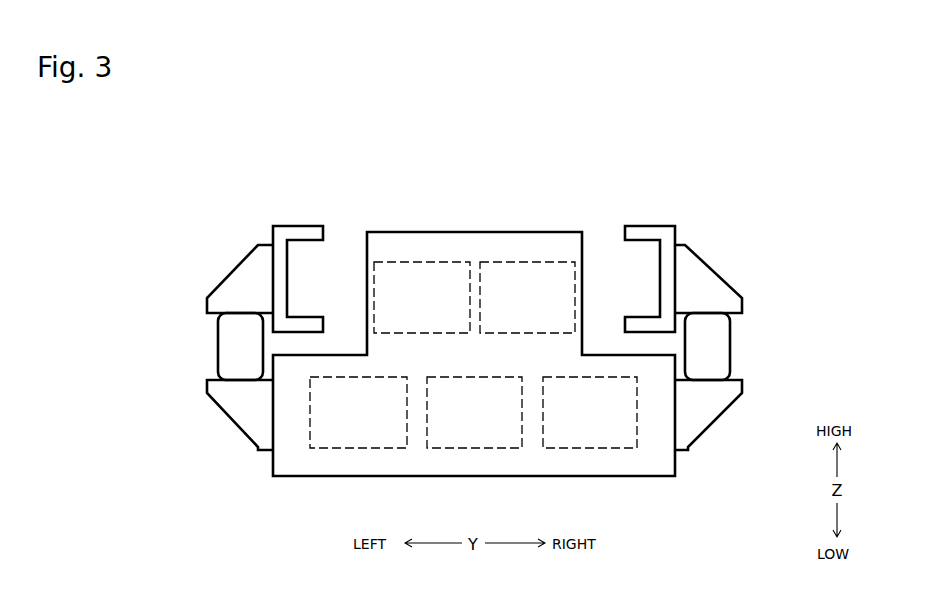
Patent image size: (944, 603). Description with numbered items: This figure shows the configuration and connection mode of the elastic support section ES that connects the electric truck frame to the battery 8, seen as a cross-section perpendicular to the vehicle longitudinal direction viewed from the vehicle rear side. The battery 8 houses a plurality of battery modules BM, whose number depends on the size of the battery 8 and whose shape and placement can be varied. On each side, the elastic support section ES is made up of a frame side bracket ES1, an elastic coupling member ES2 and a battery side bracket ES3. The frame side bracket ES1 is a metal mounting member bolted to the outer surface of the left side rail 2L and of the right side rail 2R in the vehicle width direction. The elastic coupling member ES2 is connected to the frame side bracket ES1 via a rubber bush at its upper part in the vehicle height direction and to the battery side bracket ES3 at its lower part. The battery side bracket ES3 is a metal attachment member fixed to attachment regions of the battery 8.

The battery 8 is at (465, 240).
The left side rail 2L is at (298, 230).
The right side rail 2R is at (650, 230).
The battery module BM is at (399, 262).
The elastic support section ES is at (471, 347).
The frame side bracket ES1 is at (207, 303).
The elastic coupling member ES2 is at (228, 347).
The battery side bracket ES3 is at (471, 415).